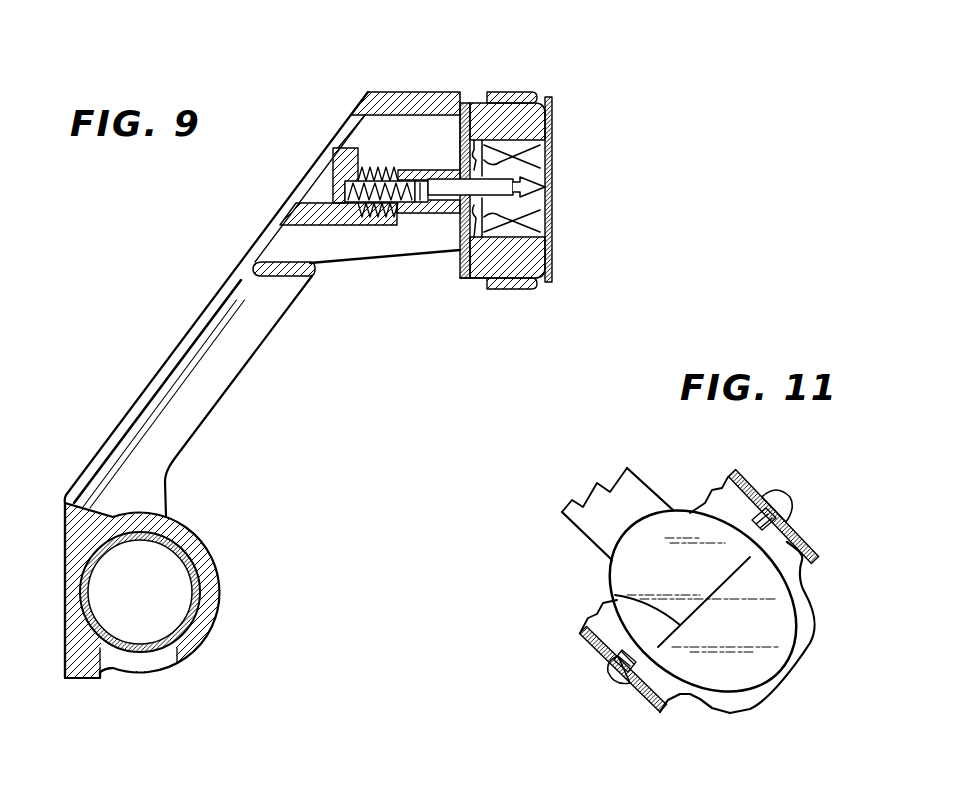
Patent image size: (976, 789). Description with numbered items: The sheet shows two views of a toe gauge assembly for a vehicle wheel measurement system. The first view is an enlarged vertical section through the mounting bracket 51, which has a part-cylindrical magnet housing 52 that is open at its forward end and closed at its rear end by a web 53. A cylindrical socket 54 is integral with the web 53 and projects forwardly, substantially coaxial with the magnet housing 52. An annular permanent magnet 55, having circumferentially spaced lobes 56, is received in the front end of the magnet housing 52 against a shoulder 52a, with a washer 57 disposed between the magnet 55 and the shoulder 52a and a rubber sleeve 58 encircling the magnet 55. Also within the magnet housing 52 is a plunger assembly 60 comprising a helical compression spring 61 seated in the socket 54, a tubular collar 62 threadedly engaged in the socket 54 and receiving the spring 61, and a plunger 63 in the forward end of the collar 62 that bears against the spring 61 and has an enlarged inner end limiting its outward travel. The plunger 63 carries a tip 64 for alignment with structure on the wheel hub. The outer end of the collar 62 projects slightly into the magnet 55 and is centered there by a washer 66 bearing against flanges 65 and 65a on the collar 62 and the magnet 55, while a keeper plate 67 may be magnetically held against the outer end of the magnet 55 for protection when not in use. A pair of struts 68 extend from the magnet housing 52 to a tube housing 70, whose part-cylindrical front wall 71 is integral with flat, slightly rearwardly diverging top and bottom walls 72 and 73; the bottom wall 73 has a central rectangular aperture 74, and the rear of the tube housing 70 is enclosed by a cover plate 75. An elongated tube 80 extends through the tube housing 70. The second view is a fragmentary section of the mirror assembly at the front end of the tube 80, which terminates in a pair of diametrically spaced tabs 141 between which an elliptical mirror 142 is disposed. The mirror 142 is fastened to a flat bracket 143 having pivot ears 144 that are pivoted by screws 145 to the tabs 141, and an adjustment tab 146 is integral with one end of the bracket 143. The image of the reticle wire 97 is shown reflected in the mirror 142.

In FIG. 9, the mounting bracket 51 is at (131, 249).
In FIG. 9, the magnet housing 52 is at (420, 92).
In FIG. 9, the shoulder 52a is at (468, 100).
In FIG. 9, the web 53 is at (336, 163).
In FIG. 9, the cylindrical socket 54 is at (365, 222).
In FIG. 9, the annular permanent magnet 55 is at (475, 287).
In FIG. 9, the lobes 56 is at (536, 253).
In FIG. 9, the washer 57 is at (462, 279).
In FIG. 9, the rubber sleeve 58 is at (522, 92).
In FIG. 9, the plunger assembly 60 is at (395, 247).
In FIG. 9, the helical compression spring 61 is at (372, 170).
In FIG. 9, the tubular collar 62 is at (412, 170).
In FIG. 9, the plunger 63 is at (449, 196).
In FIG. 9, the tip 64 is at (553, 186).
In FIG. 9, the flange 65 is at (552, 147).
In FIG. 9, the flange 65a is at (466, 240).
In FIG. 9, the washer 66 is at (459, 148).
In FIG. 9, the keeper plate 67 is at (553, 110).
In FIG. 9, the struts 68 is at (213, 380).
In FIG. 9, the tube housing 70 is at (101, 490).
In FIG. 9, the part-cylindrical front wall 71 is at (221, 583).
In FIG. 9, the top wall 72 is at (131, 520).
In FIG. 9, the bottom wall 73 is at (88, 674).
In FIG. 9, the rectangular aperture 74 is at (113, 673).
In FIG. 9, the cover plate 75 is at (67, 587).
In FIG. 9, the elongated tube 80 is at (190, 560).
In FIG. 11, the reticle wire 97 is at (617, 597).
In FIG. 11, the tabs 141 is at (815, 557).
In FIG. 11, the elliptical mirror 142 is at (773, 615).
In FIG. 11, the flat bracket 143 is at (810, 637).
In FIG. 11, the pivot ears 144 is at (797, 530).
In FIG. 11, the screws 145 is at (775, 490).
In FIG. 11, the adjustment tab 146 is at (607, 485).